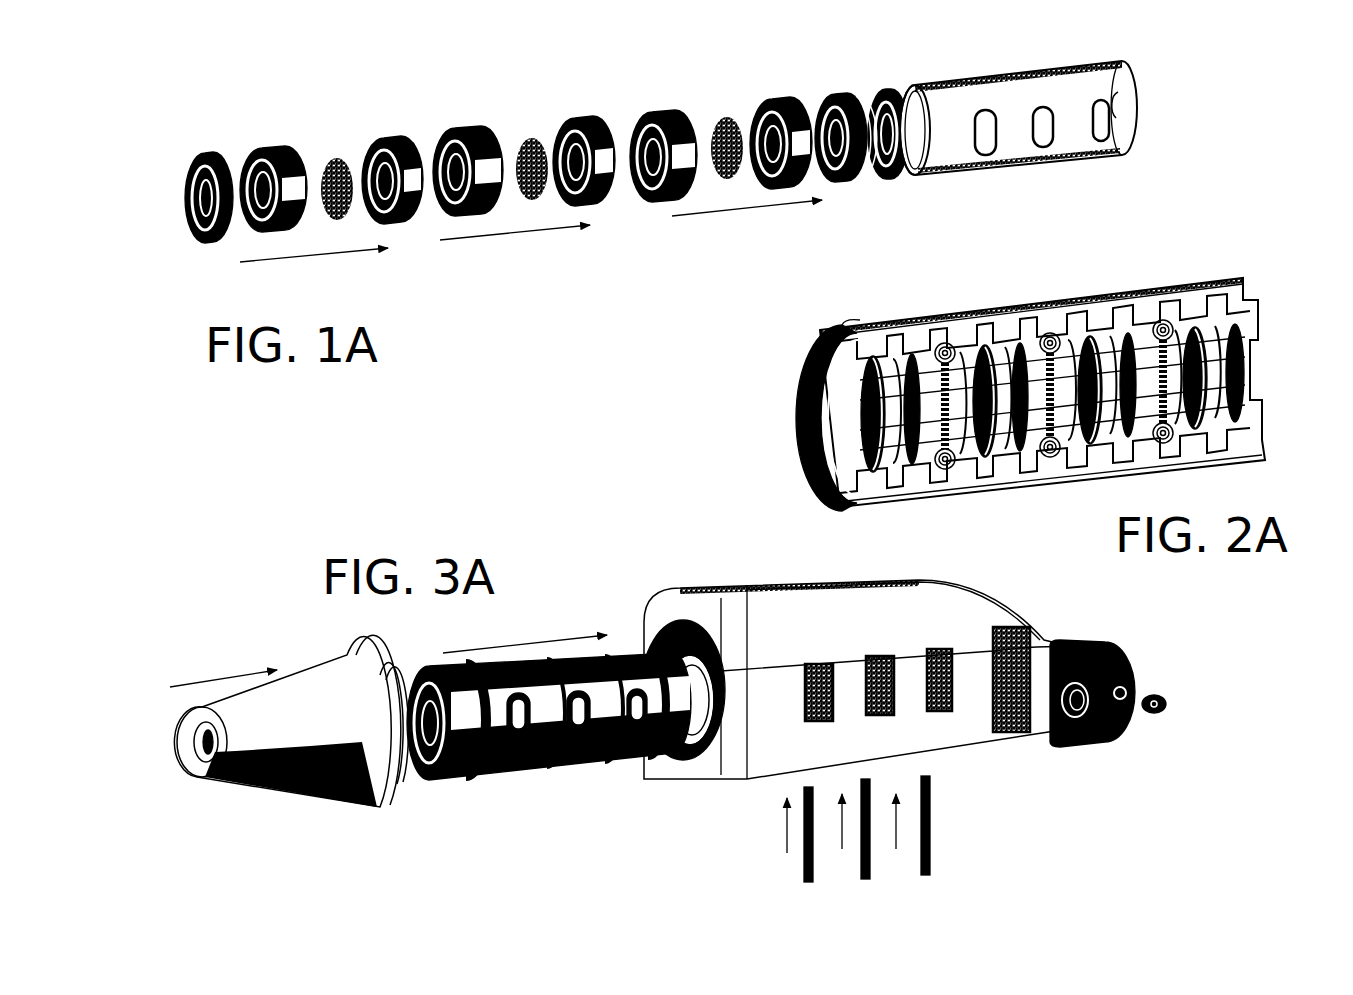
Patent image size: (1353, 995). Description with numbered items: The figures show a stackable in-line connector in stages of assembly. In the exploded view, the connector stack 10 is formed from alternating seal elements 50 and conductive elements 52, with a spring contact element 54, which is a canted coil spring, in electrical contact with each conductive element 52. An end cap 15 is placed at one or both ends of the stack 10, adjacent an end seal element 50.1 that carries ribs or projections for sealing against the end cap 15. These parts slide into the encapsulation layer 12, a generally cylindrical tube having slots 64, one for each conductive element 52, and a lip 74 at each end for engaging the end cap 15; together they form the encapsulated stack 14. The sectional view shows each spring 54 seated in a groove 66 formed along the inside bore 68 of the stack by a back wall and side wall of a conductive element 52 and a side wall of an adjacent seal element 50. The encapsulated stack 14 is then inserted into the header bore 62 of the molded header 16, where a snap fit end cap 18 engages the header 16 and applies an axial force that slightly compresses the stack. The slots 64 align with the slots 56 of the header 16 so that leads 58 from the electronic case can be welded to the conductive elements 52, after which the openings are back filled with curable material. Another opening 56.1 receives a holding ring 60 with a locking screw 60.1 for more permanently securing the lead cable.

In FIG. 1A, the connector stack 10 is at (512, 110).
In FIG. 3A, the connector stack 10 is at (588, 612).
In FIG. 1A, the encapsulation layer 12 is at (970, 70).
In FIG. 2A, the encapsulation layer 12 is at (1143, 290).
In FIG. 3A, the encapsulated stack 14 is at (549, 759).
In FIG. 1A, the end cap 15 is at (207, 147).
In FIG. 2A, the end cap 15 is at (852, 330).
In FIG. 3A, the molded header 16 is at (770, 570).
In FIG. 3A, the snap fit end cap 18 is at (303, 656).
In FIG. 1A, the seal element 50 is at (275, 146).
In FIG. 1A, the end seal element 50.1 is at (818, 100).
In FIG. 1A, the conductive element 52 is at (388, 134).
In FIG. 2A, the conductive element 52 is at (1062, 462).
In FIG. 1A, the spring contact element 54 is at (339, 159).
In FIG. 3A, the slot 56 is at (945, 650).
In FIG. 3A, the opening 56.1 is at (1012, 650).
In FIG. 3A, the lead 58 is at (934, 836).
In FIG. 3A, the holding ring 60 is at (1127, 648).
In FIG. 3A, the locking screw 60.1 is at (1168, 696).
In FIG. 3A, the header bore 62 is at (648, 608).
In FIG. 1A, the slot 64 is at (1086, 137).
In FIG. 3A, the slot 64 is at (625, 756).
In FIG. 2A, the groove 66 is at (946, 343).
In FIG. 2A, the inside bore 68 is at (836, 409).
In FIG. 1A, the lip 74 is at (1118, 106).